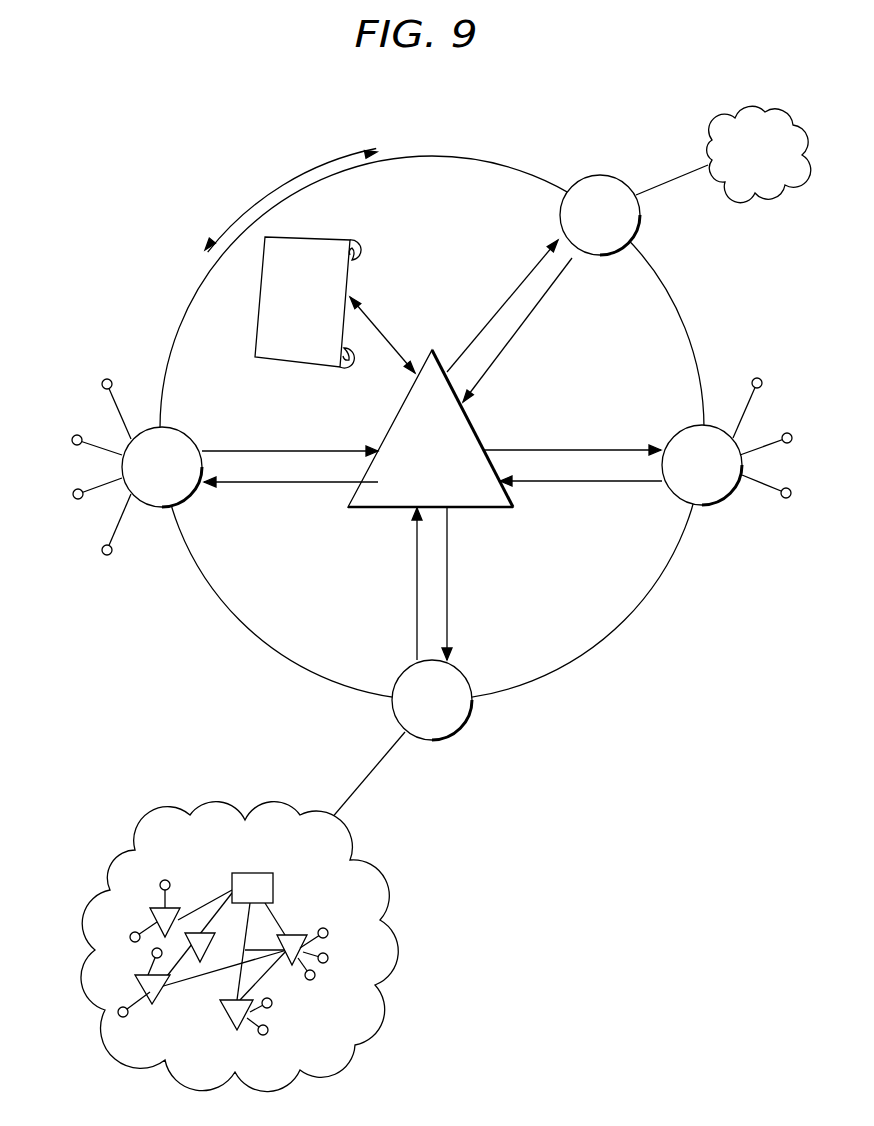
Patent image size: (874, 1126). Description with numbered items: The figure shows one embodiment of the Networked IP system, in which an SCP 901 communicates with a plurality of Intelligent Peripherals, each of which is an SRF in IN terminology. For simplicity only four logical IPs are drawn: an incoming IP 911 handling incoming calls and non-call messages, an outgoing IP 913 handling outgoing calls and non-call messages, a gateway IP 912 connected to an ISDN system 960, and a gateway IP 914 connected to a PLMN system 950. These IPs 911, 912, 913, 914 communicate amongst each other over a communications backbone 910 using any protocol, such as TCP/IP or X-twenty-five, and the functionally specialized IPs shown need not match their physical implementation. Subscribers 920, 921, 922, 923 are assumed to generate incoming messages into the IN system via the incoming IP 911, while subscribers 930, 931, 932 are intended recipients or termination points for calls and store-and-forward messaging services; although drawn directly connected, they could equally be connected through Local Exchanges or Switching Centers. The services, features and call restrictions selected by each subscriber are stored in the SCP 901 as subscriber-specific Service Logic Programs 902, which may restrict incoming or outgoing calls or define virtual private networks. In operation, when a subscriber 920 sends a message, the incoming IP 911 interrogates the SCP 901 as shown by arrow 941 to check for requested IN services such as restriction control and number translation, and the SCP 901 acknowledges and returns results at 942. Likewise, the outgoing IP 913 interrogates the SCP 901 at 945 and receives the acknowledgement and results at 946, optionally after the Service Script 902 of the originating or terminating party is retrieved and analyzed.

The communications backbone 910 is at (416, 150).
The SCP 901 is at (413, 491).
The Service Logic Programs 902 is at (316, 351).
The incoming IP 911 is at (160, 508).
The ISDN gateway IP 912 is at (447, 738).
The outgoing IP 913 is at (700, 506).
The PLMN gateway IP 914 is at (641, 222).
The subscriber 920 is at (102, 377).
The subscriber 921 is at (71, 434).
The subscriber 922 is at (71, 499).
The subscriber 923 is at (101, 556).
The subscriber 930 is at (766, 378).
The subscriber 931 is at (798, 432).
The subscriber 932 is at (795, 498).
The interrogation arrow 941 is at (236, 450).
The acknowledgement 942 is at (249, 487).
The interrogation 945 is at (630, 484).
The acknowledgement 946 is at (616, 448).
The PLMN system 950 is at (772, 110).
The ISDN system 960 is at (183, 1064).